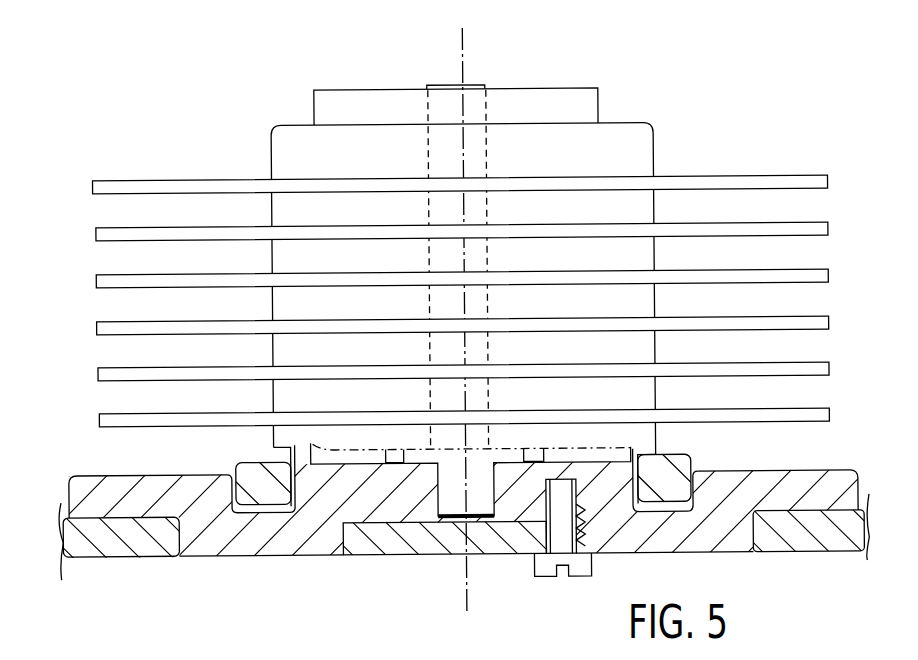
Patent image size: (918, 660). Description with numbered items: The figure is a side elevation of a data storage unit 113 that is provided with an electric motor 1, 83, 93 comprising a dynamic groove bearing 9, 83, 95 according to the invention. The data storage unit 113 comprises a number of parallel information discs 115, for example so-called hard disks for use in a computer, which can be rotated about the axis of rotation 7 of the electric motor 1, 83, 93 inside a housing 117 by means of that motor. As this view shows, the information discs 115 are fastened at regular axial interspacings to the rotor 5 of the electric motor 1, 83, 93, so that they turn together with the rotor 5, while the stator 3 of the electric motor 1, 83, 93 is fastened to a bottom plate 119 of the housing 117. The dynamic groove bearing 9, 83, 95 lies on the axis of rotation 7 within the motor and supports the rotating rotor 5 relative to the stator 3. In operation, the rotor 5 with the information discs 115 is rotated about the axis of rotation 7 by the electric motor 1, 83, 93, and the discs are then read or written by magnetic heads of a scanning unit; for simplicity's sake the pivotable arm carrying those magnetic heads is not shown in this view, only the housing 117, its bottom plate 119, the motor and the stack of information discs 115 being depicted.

The electric motor 1 is at (493, 295).
The dynamic groove bearing 83 is at (493, 295).
The electric motor 93 is at (493, 295).
The stator 3 is at (459, 533).
The rotor 5 is at (295, 152).
The axis of rotation 7 is at (458, 44).
The dynamic groove bearing 9 is at (472, 533).
The dynamic groove bearing 95 is at (426, 440).
The data storage unit 113 is at (459, 533).
The information discs 115 is at (98, 327).
The housing 117 is at (120, 540).
The bottom plate 119 is at (829, 486).